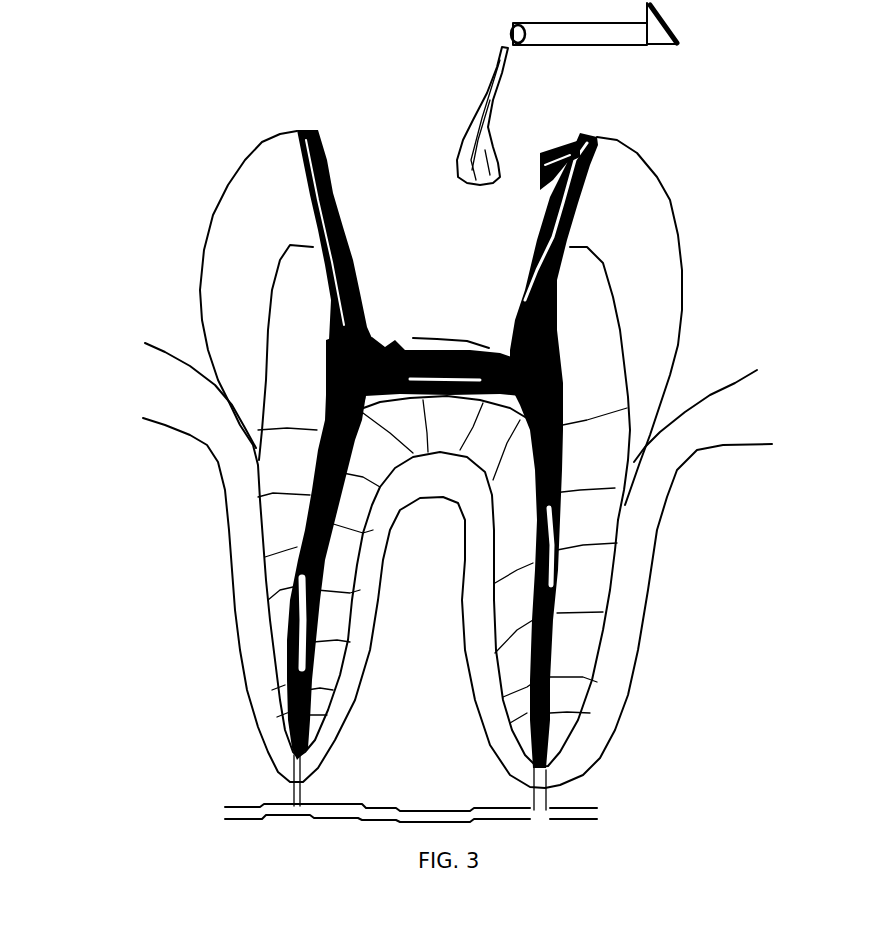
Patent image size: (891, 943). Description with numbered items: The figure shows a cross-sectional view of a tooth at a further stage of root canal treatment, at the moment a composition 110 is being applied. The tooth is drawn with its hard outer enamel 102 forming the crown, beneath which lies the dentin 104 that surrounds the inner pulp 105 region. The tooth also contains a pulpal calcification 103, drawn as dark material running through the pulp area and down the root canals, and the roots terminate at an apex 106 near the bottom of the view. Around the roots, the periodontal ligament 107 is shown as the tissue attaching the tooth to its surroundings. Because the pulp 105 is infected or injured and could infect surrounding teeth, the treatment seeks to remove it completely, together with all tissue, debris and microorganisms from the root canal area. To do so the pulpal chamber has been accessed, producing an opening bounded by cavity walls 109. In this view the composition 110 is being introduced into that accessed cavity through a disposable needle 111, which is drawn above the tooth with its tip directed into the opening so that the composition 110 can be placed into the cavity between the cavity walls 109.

The enamel 102 is at (489, 444).
The pulpal calcification 103 is at (434, 450).
The dentin 104 is at (534, 546).
The pulp 105 is at (625, 631).
The apex 106 is at (490, 779).
The periodontal ligament 107 is at (438, 603).
The cavity walls 109 is at (245, 270).
The composition 110 is at (385, 116).
The disposable needle 111 is at (693, 34).